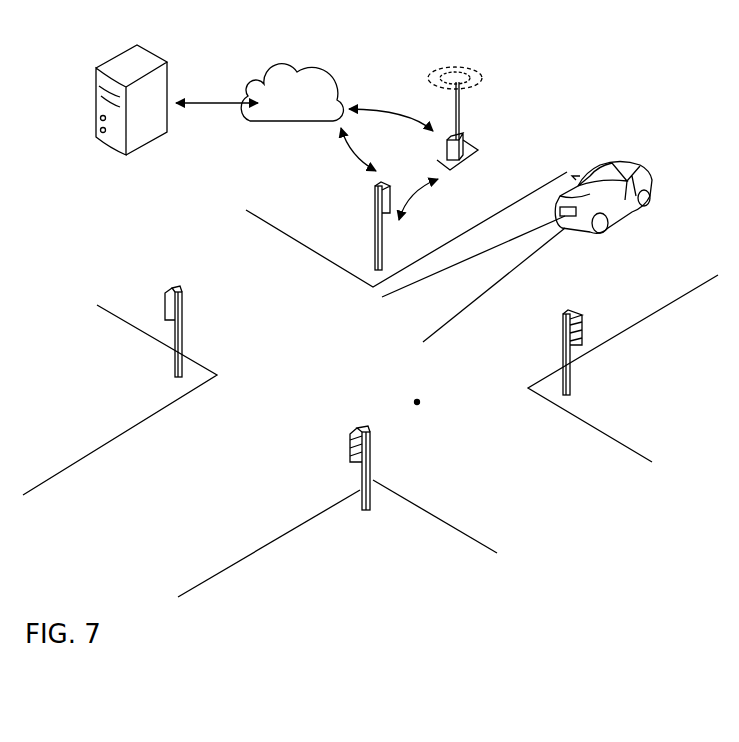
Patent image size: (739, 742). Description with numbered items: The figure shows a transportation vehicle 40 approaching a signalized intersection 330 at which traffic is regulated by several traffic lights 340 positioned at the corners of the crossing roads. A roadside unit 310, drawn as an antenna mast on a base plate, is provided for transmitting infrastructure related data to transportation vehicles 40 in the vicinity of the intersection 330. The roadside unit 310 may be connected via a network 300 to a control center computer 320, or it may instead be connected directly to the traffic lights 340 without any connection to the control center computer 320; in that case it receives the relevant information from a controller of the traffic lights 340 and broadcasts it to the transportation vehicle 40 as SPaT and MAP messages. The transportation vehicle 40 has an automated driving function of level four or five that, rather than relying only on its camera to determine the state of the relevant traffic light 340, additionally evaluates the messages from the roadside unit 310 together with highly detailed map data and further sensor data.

The control center computer 320 is at (113, 59).
The network 300 is at (323, 76).
The roadside unit 310 is at (461, 114).
The transportation vehicle 40 is at (627, 163).
The traffic lights 340 is at (373, 230).
The signalized intersection 330 is at (417, 404).